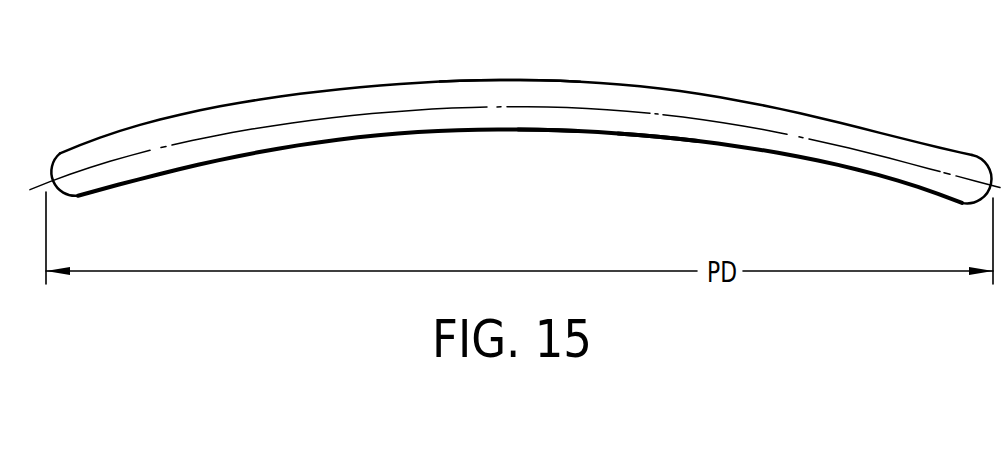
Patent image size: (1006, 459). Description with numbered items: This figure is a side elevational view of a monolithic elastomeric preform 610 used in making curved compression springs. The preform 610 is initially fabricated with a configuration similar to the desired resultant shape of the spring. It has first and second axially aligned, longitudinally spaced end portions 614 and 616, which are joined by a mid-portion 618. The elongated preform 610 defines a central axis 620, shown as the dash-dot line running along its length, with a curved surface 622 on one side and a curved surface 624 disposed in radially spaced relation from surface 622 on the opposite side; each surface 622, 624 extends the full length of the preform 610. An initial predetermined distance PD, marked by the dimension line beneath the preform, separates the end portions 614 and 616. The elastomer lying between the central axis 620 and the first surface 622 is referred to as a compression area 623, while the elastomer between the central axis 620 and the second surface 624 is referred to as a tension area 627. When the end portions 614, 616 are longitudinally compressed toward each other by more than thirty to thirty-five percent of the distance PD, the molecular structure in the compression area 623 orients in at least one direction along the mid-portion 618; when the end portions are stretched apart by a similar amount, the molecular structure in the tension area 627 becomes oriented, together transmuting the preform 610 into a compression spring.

The preform 610 is at (515, 138).
The first end portion 614 is at (82, 183).
The second end portion 616 is at (967, 192).
The mid-portion 618 is at (490, 120).
The central axis 620 is at (333, 117).
The curved surface 622 is at (667, 90).
The compression area 623 is at (512, 95).
The curved surface 624 is at (658, 137).
The tension area 627 is at (543, 118).